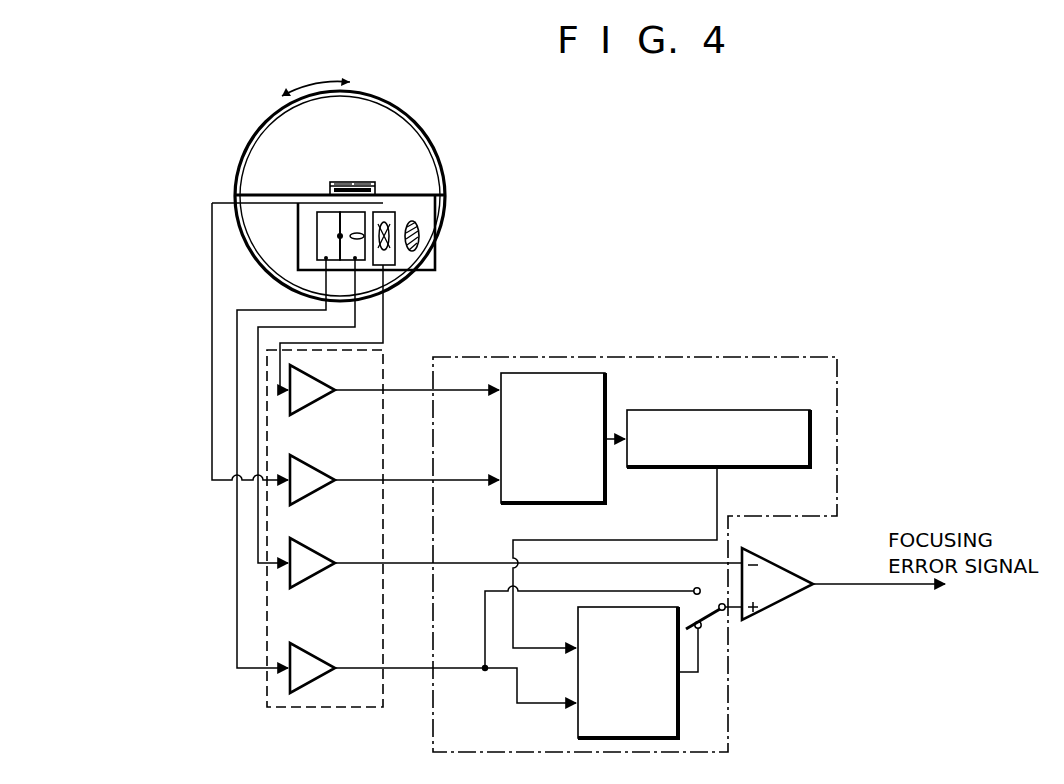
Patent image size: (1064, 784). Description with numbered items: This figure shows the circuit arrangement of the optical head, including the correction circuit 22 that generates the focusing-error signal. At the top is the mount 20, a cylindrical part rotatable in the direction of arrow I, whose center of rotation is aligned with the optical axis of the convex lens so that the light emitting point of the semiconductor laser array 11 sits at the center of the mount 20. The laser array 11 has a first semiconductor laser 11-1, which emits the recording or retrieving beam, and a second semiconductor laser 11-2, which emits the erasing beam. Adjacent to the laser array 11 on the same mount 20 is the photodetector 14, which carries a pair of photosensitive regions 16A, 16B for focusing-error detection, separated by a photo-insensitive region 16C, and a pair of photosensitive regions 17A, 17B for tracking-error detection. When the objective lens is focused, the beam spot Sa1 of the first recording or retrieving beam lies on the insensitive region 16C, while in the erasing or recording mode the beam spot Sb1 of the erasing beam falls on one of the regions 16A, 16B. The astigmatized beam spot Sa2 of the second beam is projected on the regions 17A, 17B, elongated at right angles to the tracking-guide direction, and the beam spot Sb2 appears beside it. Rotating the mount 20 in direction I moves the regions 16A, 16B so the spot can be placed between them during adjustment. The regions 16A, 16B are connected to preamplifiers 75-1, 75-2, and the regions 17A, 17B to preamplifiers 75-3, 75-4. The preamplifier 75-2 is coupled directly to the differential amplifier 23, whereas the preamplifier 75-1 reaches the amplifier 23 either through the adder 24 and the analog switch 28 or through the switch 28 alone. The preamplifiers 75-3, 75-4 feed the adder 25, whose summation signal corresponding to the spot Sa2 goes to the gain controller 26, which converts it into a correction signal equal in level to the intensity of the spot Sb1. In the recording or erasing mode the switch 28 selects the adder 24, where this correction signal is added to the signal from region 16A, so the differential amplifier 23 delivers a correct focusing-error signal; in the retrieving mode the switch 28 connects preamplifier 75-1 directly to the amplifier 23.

The direction of rotation I is at (308, 86).
The mount 20 is at (418, 119).
The photodetector 14 is at (300, 249).
The photosensitive region 16A is at (323, 226).
The photosensitive region 16B is at (350, 217).
The photo-insensitive region 16C is at (322, 222).
The beam spot Sa1 is at (336, 242).
The beam spot Sb1 is at (355, 246).
The photosensitive region 17A is at (391, 212).
The beam spot Sa2 is at (388, 244).
The beam spot Sb2 is at (419, 246).
The photosensitive region 17B is at (386, 268).
The semiconductor laser array 11 is at (375, 188).
The first semiconductor laser 11-1 is at (340, 182).
The second semiconductor laser 11-2 is at (367, 182).
The preamplifier 75-1 is at (310, 654).
The preamplifier 75-2 is at (310, 550).
The preamplifier 75-3 is at (310, 466).
The preamplifier 75-4 is at (310, 405).
The correction circuit 22 is at (838, 397).
The adder 25 is at (606, 383).
The gain controller 26 is at (724, 410).
The adder 24 is at (678, 712).
The analog switch 28 is at (708, 623).
The differential amplifier 23 is at (776, 599).